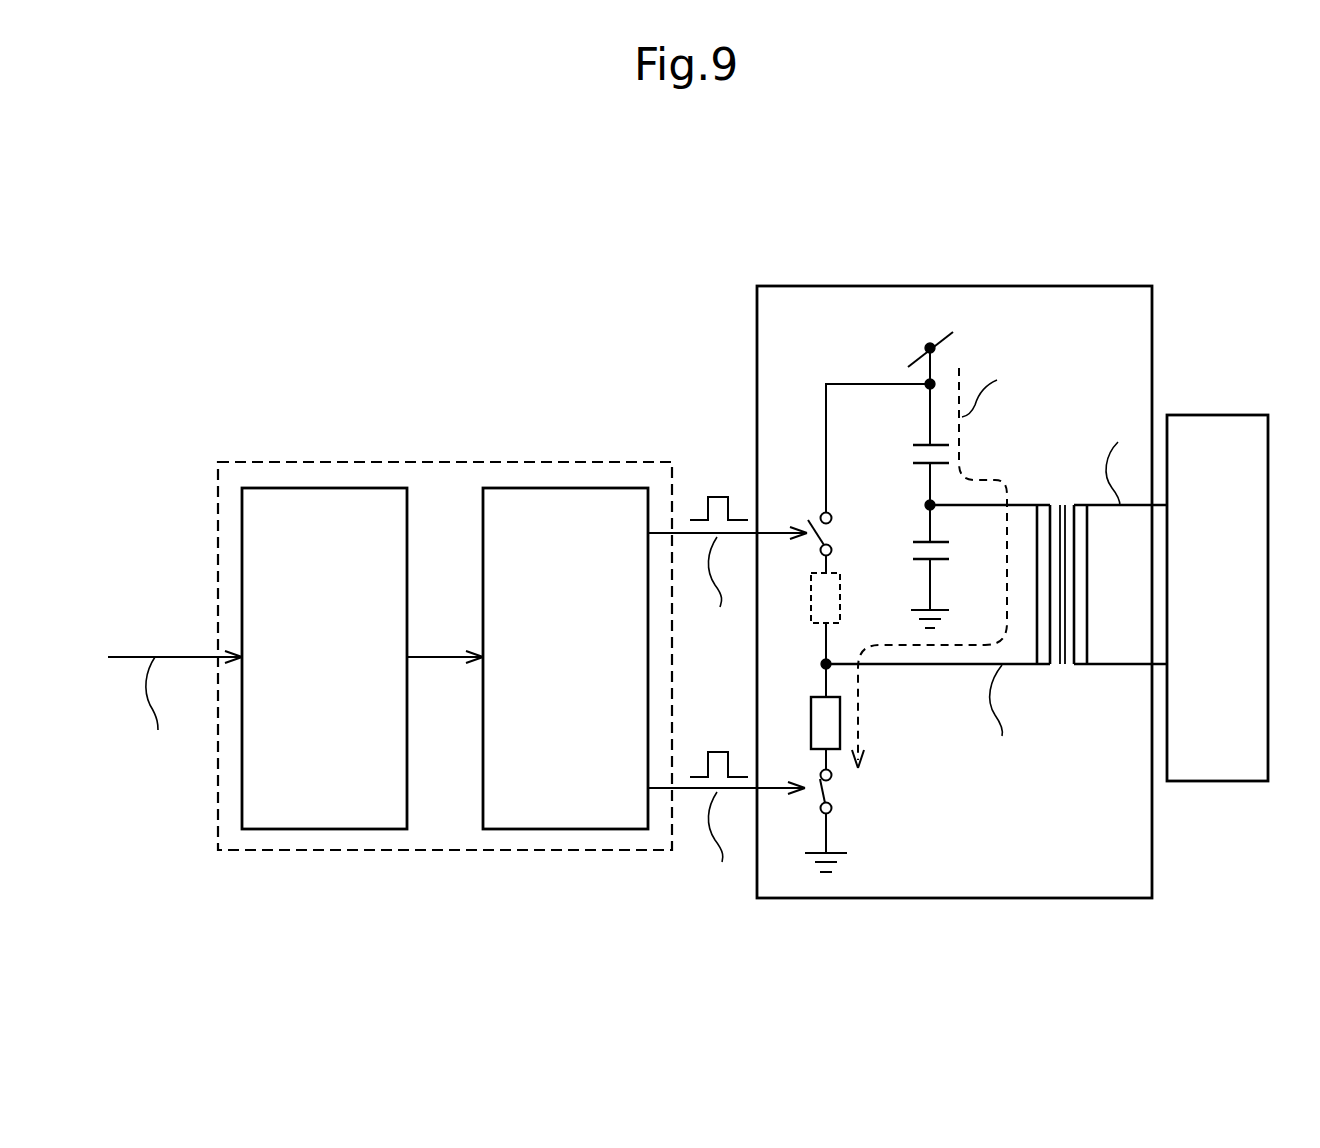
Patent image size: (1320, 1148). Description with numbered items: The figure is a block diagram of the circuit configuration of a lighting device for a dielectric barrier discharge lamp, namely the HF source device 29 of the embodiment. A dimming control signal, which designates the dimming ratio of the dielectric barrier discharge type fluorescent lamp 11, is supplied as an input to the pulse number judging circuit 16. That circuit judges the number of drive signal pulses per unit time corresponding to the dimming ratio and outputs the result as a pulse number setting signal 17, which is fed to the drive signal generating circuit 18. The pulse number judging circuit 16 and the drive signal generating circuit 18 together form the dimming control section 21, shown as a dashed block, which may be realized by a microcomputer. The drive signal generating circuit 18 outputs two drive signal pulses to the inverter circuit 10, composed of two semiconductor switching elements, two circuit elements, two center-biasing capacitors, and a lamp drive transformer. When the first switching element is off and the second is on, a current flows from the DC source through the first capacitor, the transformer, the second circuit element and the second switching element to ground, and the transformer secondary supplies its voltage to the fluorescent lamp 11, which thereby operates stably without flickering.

The inverter circuit 10 is at (958, 286).
The dielectric barrier discharge type fluorescent lamp 11 is at (1218, 781).
The pulse number judging circuit 16 is at (322, 829).
The pulse number setting signal 17 is at (442, 660).
The drive signal generating circuit 18 is at (572, 829).
The dimming control section 21 is at (452, 460).
The HF source device 29 is at (580, 383).